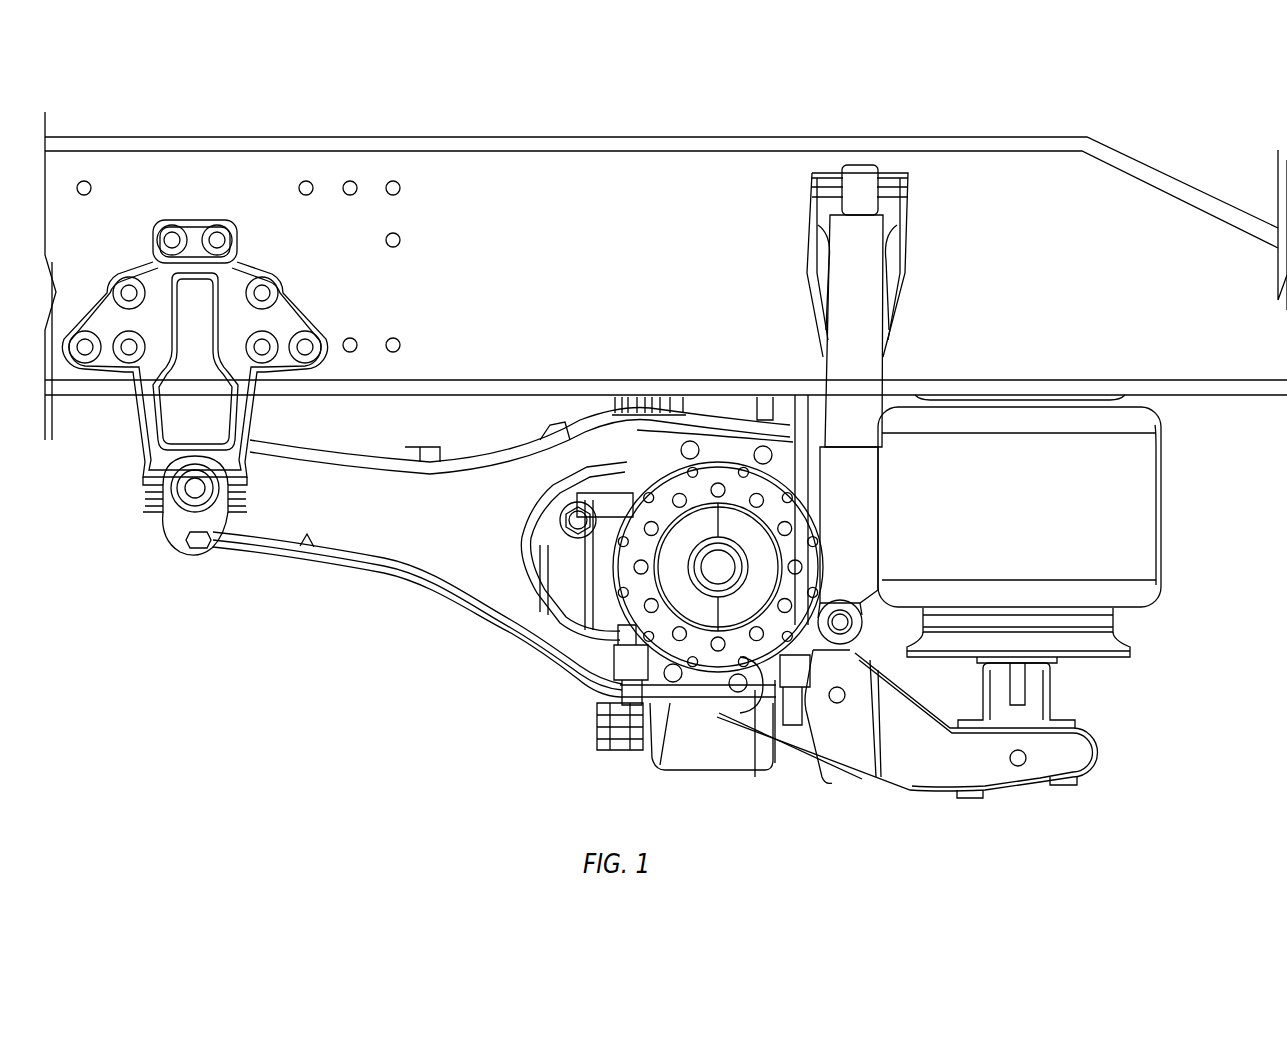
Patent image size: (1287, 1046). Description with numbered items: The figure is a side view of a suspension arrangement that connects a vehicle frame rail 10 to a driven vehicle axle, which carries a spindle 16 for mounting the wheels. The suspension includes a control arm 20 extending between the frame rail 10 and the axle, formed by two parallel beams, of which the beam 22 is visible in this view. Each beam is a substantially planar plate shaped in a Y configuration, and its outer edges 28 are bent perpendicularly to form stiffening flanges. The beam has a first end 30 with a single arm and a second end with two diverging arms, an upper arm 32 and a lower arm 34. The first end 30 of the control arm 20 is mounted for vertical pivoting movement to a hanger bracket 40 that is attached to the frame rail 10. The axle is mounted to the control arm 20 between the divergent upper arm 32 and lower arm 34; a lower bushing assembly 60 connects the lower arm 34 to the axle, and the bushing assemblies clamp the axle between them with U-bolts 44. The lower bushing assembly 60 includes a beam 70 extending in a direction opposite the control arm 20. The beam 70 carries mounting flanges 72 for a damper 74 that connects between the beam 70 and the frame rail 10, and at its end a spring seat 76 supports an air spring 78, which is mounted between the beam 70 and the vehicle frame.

The vehicle frame rail 10 is at (322, 135).
The spindle 16 is at (633, 582).
The control arm 20 is at (210, 568).
The beam 22 is at (380, 525).
The outer edges 28 is at (305, 540).
The first end 30 is at (152, 525).
The upper arm 32 is at (627, 430).
The lower arm 34 is at (710, 685).
The hanger bracket 40 is at (290, 300).
The U-bolts 44 is at (810, 700).
The lower bushing assembly 60 is at (620, 635).
The beam 70 is at (955, 795).
The mounting flanges 72 is at (872, 665).
The damper 74 is at (885, 352).
The spring seat 76 is at (1025, 725).
The air spring 78 is at (1165, 515).